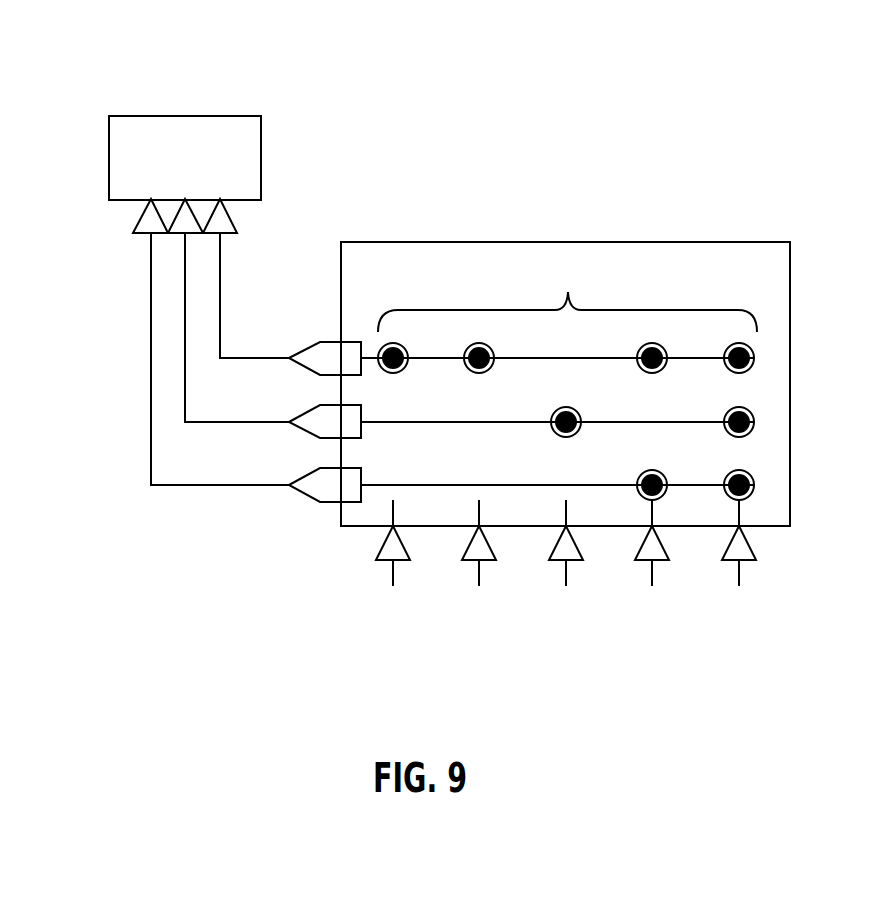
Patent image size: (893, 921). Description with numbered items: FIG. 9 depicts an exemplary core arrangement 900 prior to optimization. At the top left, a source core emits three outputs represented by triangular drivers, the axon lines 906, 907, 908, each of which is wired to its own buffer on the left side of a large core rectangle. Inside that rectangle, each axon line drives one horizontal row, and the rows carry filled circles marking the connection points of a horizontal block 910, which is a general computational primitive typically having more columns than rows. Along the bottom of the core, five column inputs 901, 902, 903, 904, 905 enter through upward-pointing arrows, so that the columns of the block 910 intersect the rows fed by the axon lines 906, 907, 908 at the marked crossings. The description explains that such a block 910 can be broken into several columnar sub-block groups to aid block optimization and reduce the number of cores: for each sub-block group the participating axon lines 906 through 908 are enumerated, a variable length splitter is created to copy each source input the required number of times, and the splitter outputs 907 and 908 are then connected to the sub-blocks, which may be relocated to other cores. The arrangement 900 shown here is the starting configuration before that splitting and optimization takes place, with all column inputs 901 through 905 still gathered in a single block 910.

The optical switching system 900 is at (398, 33).
The input port 901 is at (393, 577).
The input port 902 is at (480, 577).
The input port 903 is at (567, 577).
The input port 904 is at (653, 577).
The input port 905 is at (740, 577).
The axon line 906 is at (138, 215).
The axon line 907 is at (179, 234).
The axon line 908 is at (230, 215).
The block 910 is at (567, 315).